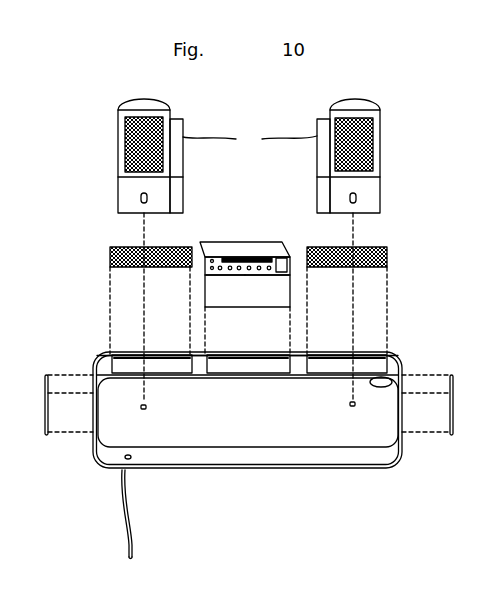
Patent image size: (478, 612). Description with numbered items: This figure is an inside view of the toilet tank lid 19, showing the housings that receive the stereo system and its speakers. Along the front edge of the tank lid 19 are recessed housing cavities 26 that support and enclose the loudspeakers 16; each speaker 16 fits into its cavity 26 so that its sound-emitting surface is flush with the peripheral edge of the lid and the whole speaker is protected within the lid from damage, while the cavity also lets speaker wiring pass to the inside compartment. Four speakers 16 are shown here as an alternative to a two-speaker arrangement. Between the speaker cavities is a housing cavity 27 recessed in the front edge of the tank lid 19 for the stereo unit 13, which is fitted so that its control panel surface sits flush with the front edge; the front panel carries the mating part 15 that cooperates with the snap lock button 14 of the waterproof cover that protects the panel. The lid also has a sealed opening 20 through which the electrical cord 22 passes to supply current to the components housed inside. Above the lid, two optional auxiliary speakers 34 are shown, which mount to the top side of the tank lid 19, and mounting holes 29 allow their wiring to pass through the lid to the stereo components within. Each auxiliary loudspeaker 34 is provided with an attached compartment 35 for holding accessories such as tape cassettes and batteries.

The stereo unit 13 is at (222, 278).
The snap lock button 14 is at (240, 244).
The mating part 15 is at (248, 278).
The speakers 16 is at (110, 256).
The tank lid 19 is at (100, 361).
The sealed opening 20 is at (128, 458).
The electrical cord 22 is at (124, 545).
The housing cavities 26 is at (170, 367).
The housing cavity 27 is at (244, 366).
The mounting holes 29 is at (396, 372).
The auxiliary speakers 34 is at (117, 139).
The attached compartment 35 is at (250, 140).